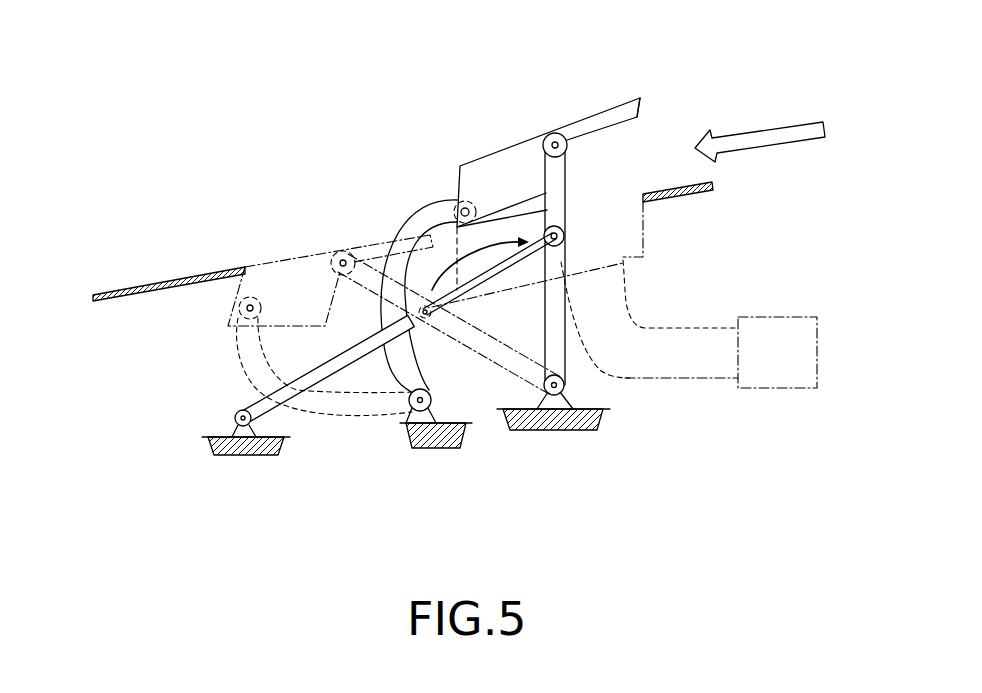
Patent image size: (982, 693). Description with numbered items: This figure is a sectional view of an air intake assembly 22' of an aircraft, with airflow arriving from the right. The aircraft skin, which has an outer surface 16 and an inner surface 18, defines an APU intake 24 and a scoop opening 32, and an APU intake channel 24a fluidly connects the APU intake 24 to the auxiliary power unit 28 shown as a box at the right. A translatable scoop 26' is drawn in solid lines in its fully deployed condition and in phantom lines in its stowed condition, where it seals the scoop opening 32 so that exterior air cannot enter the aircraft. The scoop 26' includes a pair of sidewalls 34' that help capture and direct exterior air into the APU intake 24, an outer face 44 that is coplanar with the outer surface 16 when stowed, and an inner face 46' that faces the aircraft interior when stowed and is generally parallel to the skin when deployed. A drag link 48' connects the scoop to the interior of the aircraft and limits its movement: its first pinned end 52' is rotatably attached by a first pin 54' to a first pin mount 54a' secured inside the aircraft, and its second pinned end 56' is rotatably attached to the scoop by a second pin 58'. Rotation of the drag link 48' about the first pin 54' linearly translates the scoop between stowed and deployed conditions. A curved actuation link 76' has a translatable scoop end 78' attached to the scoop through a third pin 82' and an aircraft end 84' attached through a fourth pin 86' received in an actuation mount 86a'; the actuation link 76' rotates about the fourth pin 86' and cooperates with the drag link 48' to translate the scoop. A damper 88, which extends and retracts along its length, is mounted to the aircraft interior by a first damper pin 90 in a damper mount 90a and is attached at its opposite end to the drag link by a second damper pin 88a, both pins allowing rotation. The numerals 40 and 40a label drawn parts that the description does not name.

The outer surface 16 is at (95, 294).
The inner surface 18 is at (96, 302).
The air intake assembly 22' is at (462, 278).
The APU intake 24 is at (605, 212).
The APU intake channel 24a is at (668, 355).
The translatable scoop 26' is at (585, 77).
The auxiliary power unit 28 is at (792, 373).
The scoop opening 32 is at (243, 252).
The sidewall 34' is at (547, 177).
The link 40 is at (460, 175).
The pivot 40a is at (582, 171).
The outer face 44 is at (633, 95).
The inner face 46' is at (679, 77).
The drag link 48' is at (468, 387).
The first pinned end 52' is at (487, 349).
The first pin 54' is at (606, 397).
The first pin mount 54a' is at (583, 436).
The second pinned end 56' is at (445, 267).
The second pin 58' is at (304, 205).
The actuation link 76' is at (319, 409).
The translatable scoop end 78' is at (185, 255).
The third pin 82' is at (184, 328).
The aircraft end 84' is at (344, 458).
The fourth pin 86' is at (464, 446).
The actuation mount 86a' is at (420, 486).
The damper 88 is at (265, 402).
The second damper pin 88a is at (560, 240).
The first damper pin 90 is at (235, 418).
The damper mount 90a is at (223, 435).